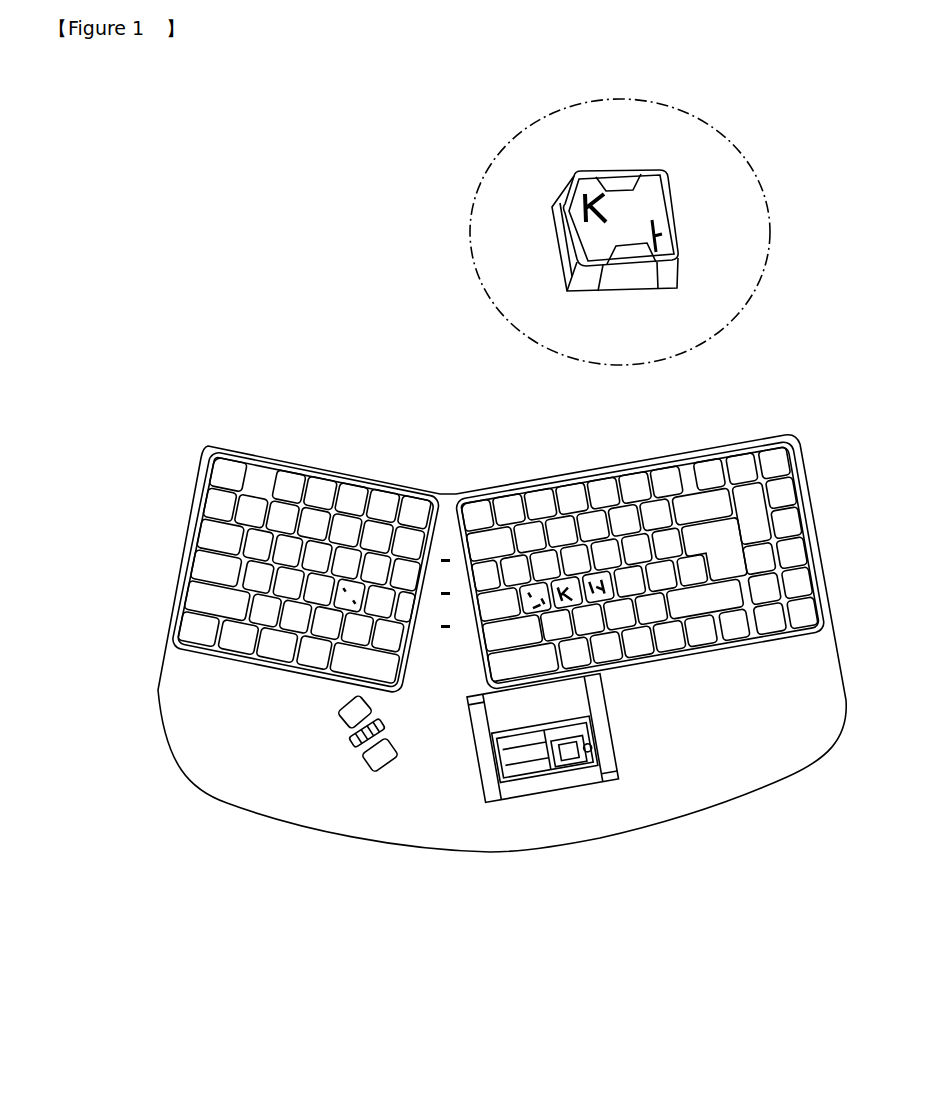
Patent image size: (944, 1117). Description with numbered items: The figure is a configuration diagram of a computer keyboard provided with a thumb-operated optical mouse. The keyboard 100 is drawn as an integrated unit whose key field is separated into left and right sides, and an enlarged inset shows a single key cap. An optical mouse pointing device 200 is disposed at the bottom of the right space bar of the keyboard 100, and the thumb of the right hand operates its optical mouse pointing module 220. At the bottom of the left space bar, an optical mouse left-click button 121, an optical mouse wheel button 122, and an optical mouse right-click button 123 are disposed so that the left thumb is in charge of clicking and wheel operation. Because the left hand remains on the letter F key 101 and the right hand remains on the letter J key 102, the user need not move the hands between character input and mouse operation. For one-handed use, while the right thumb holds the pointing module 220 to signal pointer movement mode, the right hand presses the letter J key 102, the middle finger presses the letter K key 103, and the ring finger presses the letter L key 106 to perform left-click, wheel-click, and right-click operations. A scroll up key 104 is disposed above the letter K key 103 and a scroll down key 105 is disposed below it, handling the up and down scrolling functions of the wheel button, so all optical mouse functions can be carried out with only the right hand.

The keyboard 100 is at (123, 490).
The letter F key 101 is at (350, 588).
The letter J key 102 is at (530, 593).
The letter K key 103 is at (548, 584).
The scroll up key 104 is at (563, 582).
The scroll down key 105 is at (566, 602).
The letter L key 106 is at (583, 594).
The optical mouse left-click button 121 is at (347, 717).
The optical mouse wheel button 122 is at (355, 736).
The optical mouse right-click button 123 is at (372, 753).
The optical mouse pointing device 200 is at (521, 822).
The optical mouse pointing module 220 is at (588, 777).